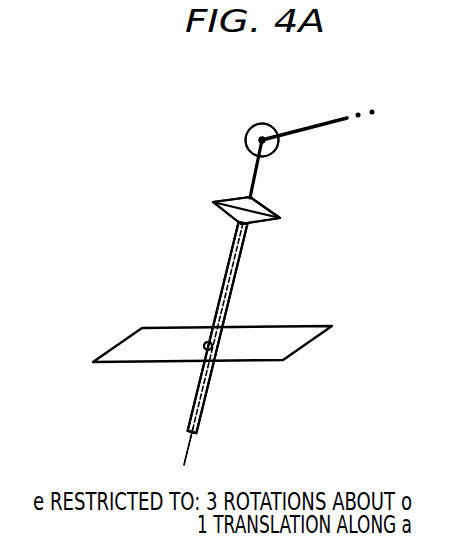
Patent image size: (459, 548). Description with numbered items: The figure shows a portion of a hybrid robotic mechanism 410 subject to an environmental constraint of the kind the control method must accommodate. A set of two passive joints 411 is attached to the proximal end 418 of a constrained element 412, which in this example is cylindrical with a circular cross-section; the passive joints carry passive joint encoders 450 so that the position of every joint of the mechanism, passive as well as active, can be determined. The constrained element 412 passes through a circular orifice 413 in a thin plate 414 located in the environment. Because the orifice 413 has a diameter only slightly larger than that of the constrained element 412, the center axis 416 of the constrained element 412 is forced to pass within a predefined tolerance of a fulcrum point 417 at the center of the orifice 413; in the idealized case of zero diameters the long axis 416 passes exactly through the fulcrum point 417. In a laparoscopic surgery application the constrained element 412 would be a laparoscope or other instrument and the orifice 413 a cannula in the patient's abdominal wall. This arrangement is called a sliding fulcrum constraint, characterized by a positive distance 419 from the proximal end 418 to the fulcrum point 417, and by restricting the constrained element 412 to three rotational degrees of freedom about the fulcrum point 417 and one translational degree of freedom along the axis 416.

The joint assembly 410 is at (122, 133).
The passive joints 411 is at (222, 112).
The passive joint encoders 450 is at (268, 146).
The proximal end 418 is at (245, 224).
The distance 419 is at (228, 220).
The constrained element 412 is at (197, 400).
The center axis 416 is at (188, 451).
The thin plate 414 is at (145, 342).
The circular orifice 413 is at (218, 343).
The fulcrum point 417 is at (205, 351).